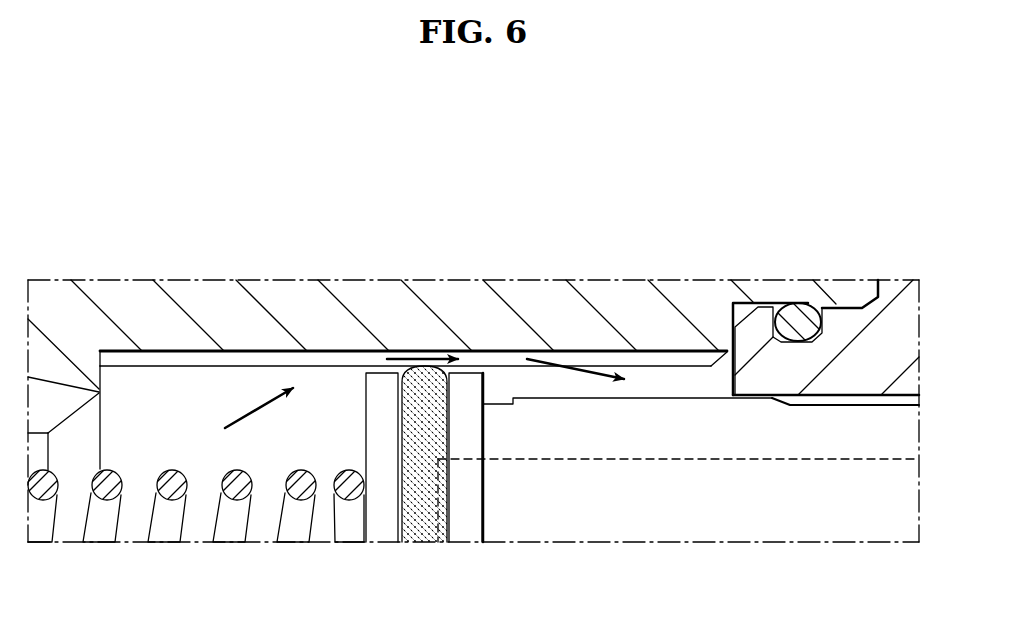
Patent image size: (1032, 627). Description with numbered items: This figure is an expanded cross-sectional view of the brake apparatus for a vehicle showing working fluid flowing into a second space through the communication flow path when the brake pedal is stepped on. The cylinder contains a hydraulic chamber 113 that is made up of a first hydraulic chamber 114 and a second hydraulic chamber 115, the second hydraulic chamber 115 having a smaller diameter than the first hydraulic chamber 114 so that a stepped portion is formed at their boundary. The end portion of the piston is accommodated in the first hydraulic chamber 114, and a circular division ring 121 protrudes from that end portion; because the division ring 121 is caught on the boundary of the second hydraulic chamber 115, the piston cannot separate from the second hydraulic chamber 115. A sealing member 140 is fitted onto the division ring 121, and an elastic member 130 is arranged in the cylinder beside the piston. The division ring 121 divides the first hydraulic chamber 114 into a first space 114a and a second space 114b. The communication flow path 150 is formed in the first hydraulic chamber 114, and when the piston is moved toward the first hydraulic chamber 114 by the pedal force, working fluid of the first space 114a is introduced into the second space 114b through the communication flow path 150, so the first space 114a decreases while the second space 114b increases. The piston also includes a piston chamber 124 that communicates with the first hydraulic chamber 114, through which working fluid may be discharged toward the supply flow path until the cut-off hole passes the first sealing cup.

The hydraulic chamber 113 is at (698, 141).
The first hydraulic chamber 114 is at (652, 388).
The first space 114a is at (238, 382).
The second space 114b is at (512, 380).
The second hydraulic chamber 115 is at (842, 406).
The division ring 121 is at (379, 395).
The piston chamber 124 is at (870, 460).
The elastic member 130 is at (172, 471).
The sealing member 140 is at (428, 378).
The communication flow path 150 is at (620, 360).